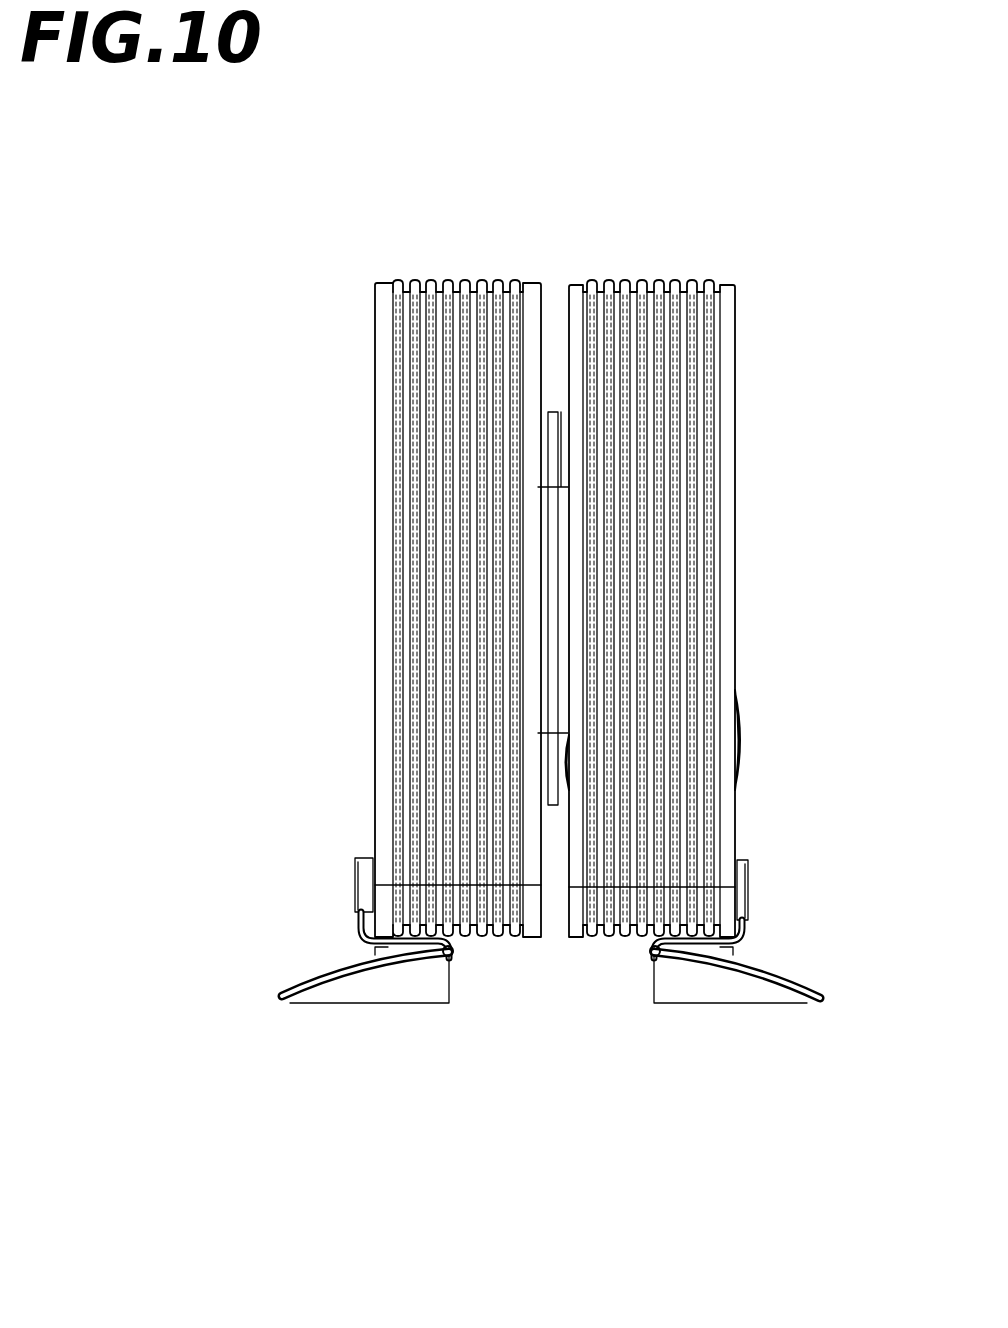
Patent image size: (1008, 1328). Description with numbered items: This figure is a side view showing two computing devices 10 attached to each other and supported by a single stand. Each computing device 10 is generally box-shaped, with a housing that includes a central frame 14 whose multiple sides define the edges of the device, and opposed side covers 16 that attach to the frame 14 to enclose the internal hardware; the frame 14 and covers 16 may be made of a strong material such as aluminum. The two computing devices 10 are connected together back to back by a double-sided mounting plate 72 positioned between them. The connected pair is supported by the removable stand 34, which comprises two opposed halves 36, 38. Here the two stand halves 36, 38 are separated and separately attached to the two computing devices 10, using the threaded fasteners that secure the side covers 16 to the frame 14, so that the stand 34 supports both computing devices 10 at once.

The computing device 10 is at (572, 542).
The central frame 14 is at (470, 283).
The side covers 16 is at (382, 530).
The double-sided mounting plate 72 is at (553, 507).
The removable stand 34 is at (551, 1060).
The stand half 36 is at (360, 977).
The stand half 38 is at (720, 970).